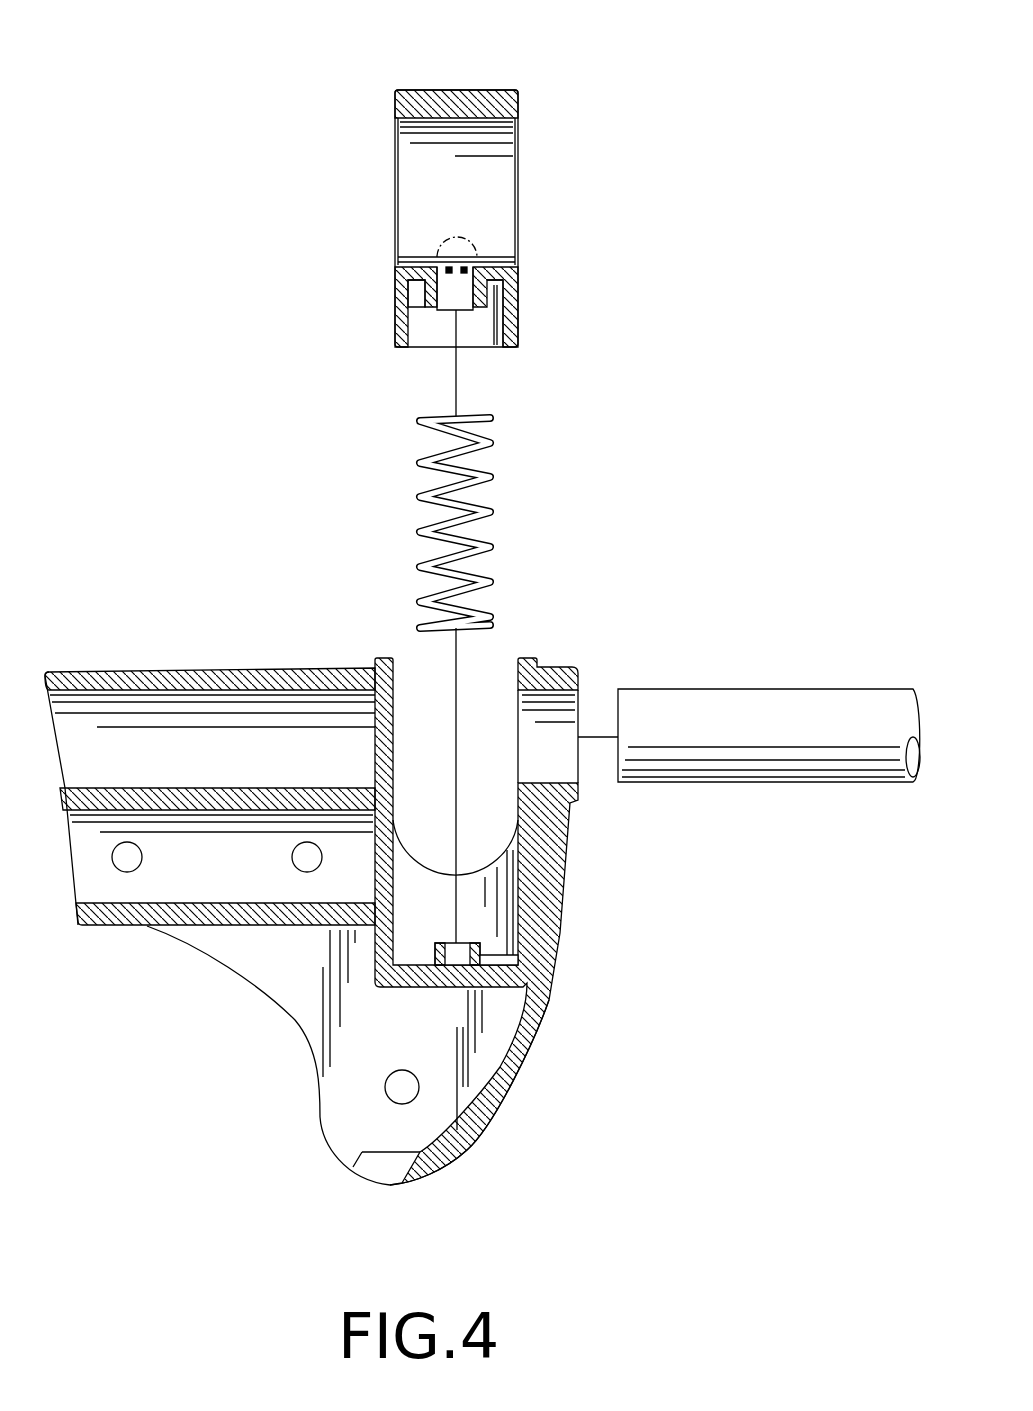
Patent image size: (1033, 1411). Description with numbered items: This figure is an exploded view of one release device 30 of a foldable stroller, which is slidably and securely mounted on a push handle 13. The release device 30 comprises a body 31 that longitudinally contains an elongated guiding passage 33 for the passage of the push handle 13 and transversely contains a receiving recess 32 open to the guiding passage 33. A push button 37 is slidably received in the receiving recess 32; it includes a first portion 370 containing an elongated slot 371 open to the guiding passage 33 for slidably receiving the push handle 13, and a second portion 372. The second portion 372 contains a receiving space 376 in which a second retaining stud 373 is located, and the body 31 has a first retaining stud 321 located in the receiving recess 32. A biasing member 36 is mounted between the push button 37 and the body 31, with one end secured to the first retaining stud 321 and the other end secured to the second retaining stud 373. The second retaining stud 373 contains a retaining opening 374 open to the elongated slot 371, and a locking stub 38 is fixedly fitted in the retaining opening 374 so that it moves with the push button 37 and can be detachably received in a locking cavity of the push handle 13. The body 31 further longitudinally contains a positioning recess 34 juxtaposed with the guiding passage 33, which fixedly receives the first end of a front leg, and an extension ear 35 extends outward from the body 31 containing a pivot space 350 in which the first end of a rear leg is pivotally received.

The push handle 13 is at (780, 692).
The release device 30 is at (266, 494).
The body 31 is at (172, 672).
The receiving recess 32 is at (520, 800).
The first retaining stud 321 is at (473, 952).
The guiding passage 33 is at (246, 682).
The positioning recess 34 is at (172, 900).
The extension ear 35 is at (512, 1085).
The pivot space 350 is at (323, 1056).
The biasing member 36 is at (478, 482).
The push button 37 is at (505, 76).
The first portion 370 is at (455, 100).
The elongated slot 371 is at (503, 190).
The second portion 372 is at (513, 318).
The second retaining stud 373 is at (485, 300).
The retaining opening 374 is at (453, 277).
The receiving space 376 is at (413, 313).
The locking stub 38 is at (467, 243).